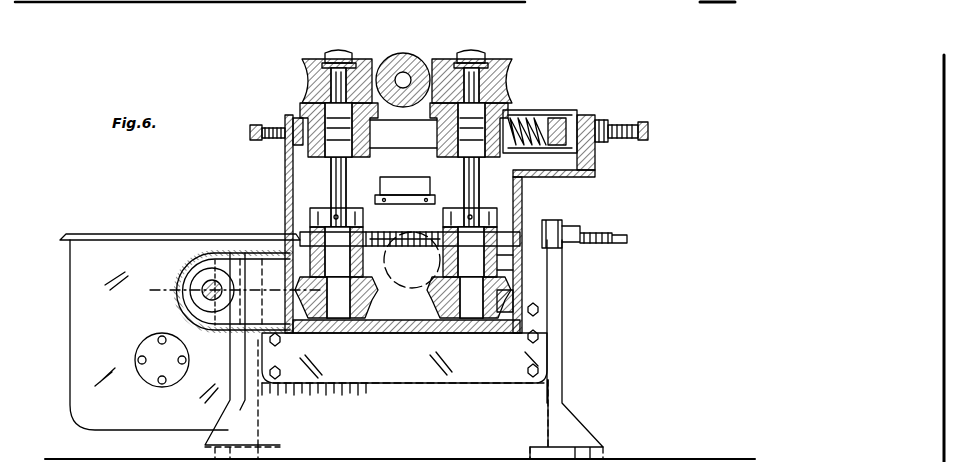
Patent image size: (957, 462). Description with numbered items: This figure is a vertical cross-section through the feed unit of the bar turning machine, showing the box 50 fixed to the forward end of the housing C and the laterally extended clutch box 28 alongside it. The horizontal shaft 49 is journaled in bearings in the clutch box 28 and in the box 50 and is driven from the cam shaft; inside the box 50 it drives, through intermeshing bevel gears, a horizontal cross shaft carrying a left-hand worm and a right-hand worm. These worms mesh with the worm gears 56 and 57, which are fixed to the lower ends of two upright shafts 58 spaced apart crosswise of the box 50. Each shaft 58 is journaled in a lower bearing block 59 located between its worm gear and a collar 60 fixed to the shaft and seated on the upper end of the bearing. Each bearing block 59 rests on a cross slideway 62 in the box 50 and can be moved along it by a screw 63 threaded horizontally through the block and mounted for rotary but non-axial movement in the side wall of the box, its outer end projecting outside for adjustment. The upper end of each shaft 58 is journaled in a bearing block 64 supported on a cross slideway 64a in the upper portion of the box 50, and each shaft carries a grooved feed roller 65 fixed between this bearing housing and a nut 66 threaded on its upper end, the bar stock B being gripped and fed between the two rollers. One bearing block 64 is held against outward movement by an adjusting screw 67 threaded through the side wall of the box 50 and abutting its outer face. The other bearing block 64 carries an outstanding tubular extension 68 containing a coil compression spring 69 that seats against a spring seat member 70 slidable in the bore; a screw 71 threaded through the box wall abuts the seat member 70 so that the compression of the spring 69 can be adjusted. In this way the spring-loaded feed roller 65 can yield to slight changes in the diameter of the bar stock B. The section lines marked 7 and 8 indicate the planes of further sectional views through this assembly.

The box 28 is at (82, 355).
The housing C is at (553, 360).
The horizontal shaft 49 is at (216, 300).
The box 50 is at (285, 166).
The worm gear 56 is at (356, 320).
The worm gear 57 is at (500, 312).
The upright shaft 58 is at (345, 188).
The lower bearing block 59 is at (362, 300).
The collar 60 is at (322, 212).
The cross slideway 62 is at (507, 263).
The screw 63 is at (420, 232).
The bearing block 64 is at (437, 134).
The cross slideway 64a is at (391, 174).
The grooved feed roller 65 is at (304, 76).
The nut 66 is at (330, 52).
The adjusting screw 67 is at (258, 125).
The tubular extension 68 is at (560, 110).
The coil compression spring 69 is at (530, 116).
The spring seat member 70 is at (588, 150).
The screw 71 is at (622, 124).
The bar stock B is at (405, 55).
The section line 7 is at (277, 236).
The section line 8 is at (175, 290).